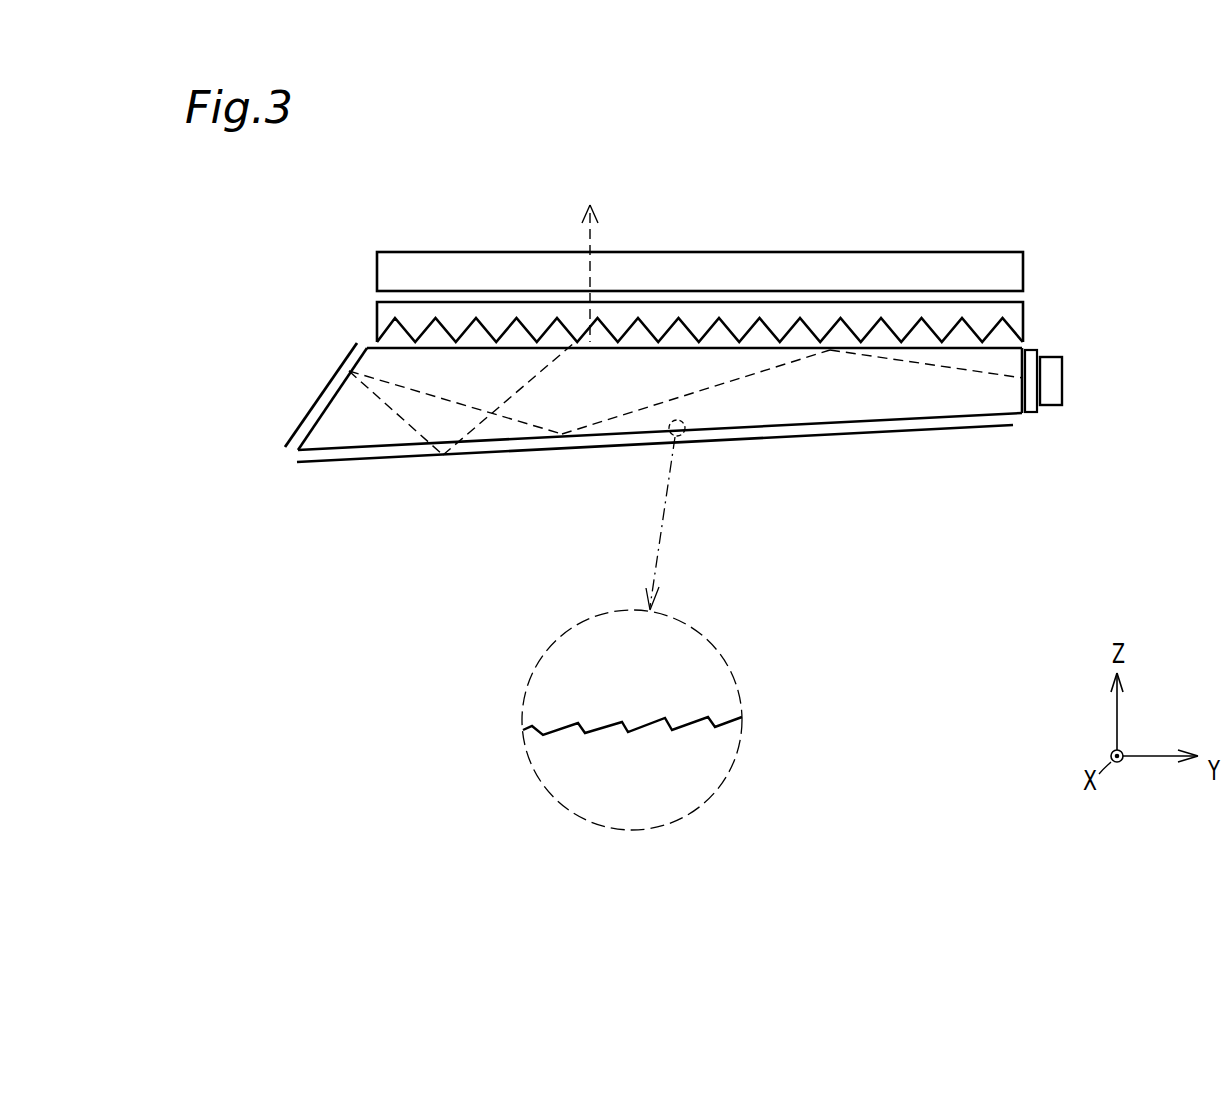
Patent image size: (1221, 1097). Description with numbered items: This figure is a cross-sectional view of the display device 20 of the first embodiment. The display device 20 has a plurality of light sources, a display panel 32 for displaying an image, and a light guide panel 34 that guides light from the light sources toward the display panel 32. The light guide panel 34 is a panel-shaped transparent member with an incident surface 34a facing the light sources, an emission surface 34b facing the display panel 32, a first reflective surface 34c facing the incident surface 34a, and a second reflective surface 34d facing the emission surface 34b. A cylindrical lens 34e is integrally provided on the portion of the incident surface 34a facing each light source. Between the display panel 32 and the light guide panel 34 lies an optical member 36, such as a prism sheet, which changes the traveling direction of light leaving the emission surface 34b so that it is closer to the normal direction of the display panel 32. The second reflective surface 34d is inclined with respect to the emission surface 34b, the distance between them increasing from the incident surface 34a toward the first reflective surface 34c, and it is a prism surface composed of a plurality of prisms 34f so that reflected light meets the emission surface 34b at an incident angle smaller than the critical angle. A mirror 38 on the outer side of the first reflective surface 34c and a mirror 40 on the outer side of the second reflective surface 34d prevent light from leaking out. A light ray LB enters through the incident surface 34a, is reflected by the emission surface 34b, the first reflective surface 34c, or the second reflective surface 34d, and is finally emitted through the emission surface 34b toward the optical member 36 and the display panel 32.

The display device 20 is at (1068, 223).
The display panel 32 is at (1023, 270).
The optical member 36 is at (1023, 321).
The light guide panel 34 is at (691, 581).
The incident surface 34a is at (1040, 410).
The emission surface 34b is at (722, 345).
The first reflective surface 34c is at (342, 387).
The second reflective surface 34d is at (780, 412).
The cylindrical lens 34e is at (1031, 412).
The prisms 34f is at (598, 725).
The mirror 38 is at (330, 390).
The mirror 40 is at (380, 463).
The light ray LB is at (590, 241).